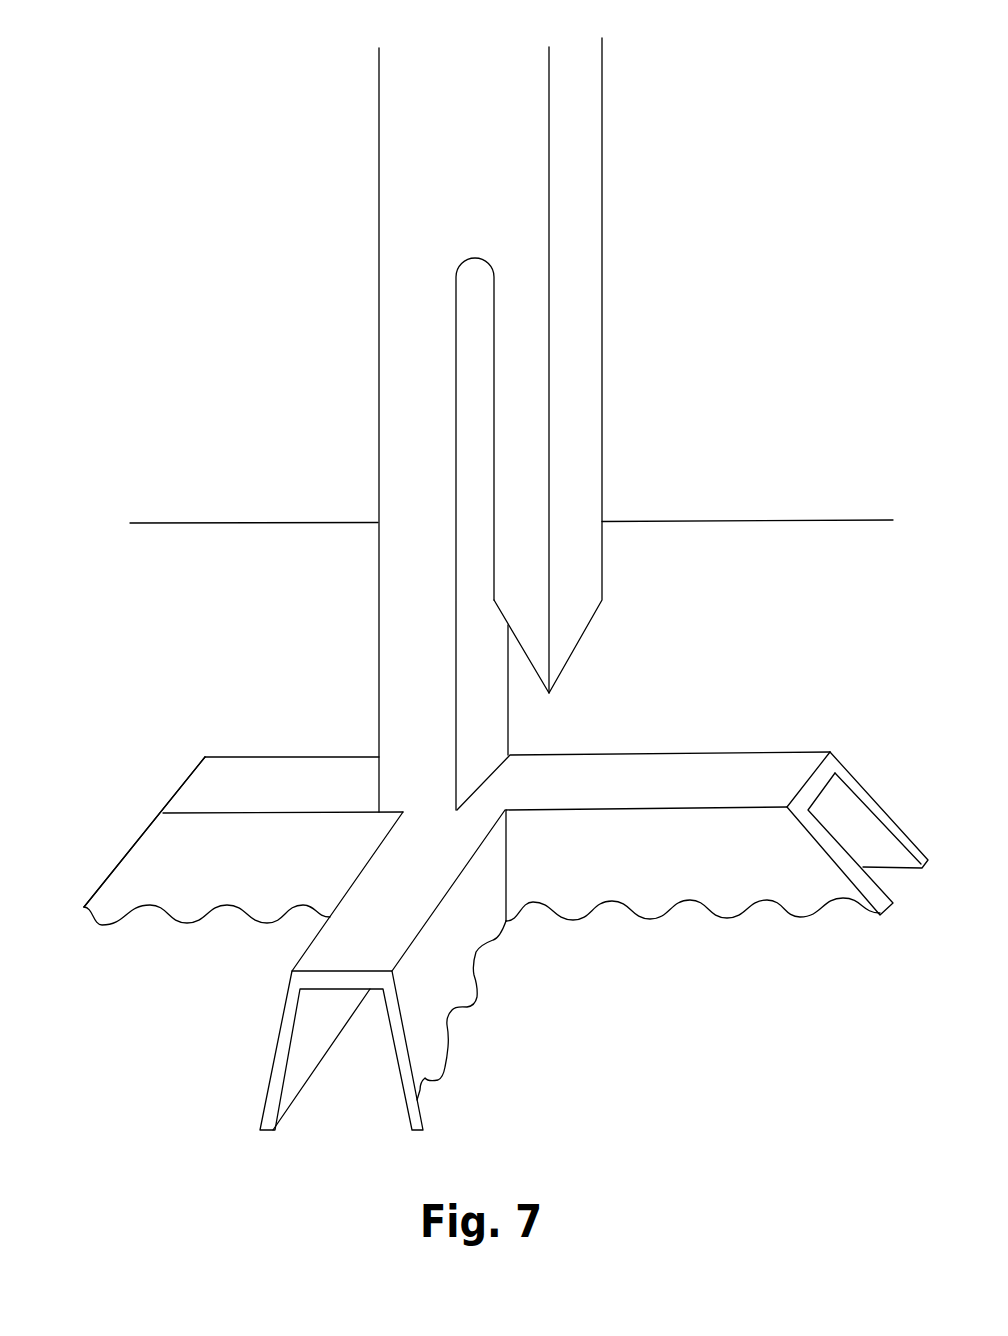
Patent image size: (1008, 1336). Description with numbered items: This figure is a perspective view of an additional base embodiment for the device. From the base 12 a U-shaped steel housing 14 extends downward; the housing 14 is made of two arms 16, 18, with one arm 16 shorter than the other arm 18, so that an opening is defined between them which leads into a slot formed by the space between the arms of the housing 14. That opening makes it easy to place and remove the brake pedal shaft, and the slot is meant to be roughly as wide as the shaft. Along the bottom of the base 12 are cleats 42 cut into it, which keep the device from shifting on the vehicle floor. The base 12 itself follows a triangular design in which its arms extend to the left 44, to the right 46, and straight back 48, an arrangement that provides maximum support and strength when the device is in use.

The base 12 is at (266, 752).
The U-shaped steel housing 14 is at (379, 208).
The arm 16 is at (578, 400).
The arm 18 is at (417, 378).
The cleats 42 is at (102, 925).
The left arm 44 is at (710, 777).
The right arm 46 is at (222, 777).
The straight back arm 48 is at (387, 933).